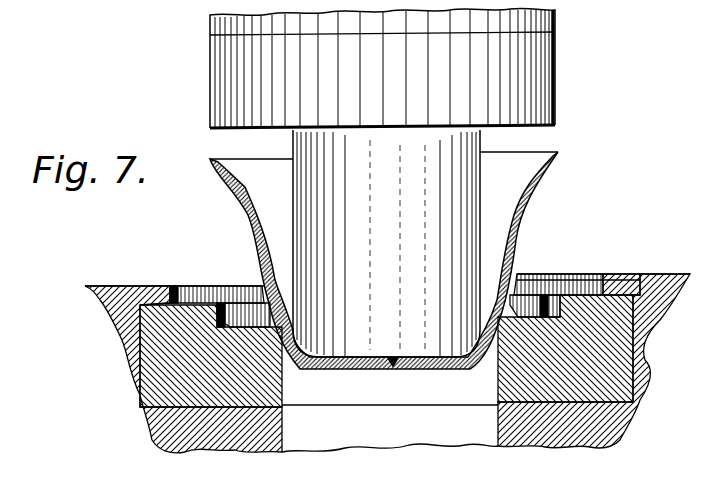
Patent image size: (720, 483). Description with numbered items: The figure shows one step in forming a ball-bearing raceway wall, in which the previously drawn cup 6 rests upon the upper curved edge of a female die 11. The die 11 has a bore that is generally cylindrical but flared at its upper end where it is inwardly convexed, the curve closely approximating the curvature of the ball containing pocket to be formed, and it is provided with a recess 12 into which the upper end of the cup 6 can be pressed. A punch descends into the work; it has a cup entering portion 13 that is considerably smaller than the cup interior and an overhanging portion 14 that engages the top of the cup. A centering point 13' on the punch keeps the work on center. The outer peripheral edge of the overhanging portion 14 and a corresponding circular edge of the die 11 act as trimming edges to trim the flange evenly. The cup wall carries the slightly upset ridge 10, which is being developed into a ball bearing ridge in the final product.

The cup 6 is at (518, 256).
The upset ridge 10 is at (533, 200).
The female die 11 is at (500, 379).
The recess 12 is at (571, 278).
The cup entering portion 13 is at (469, 231).
The centering point 13' is at (371, 382).
The overhanging portion 14 is at (556, 104).